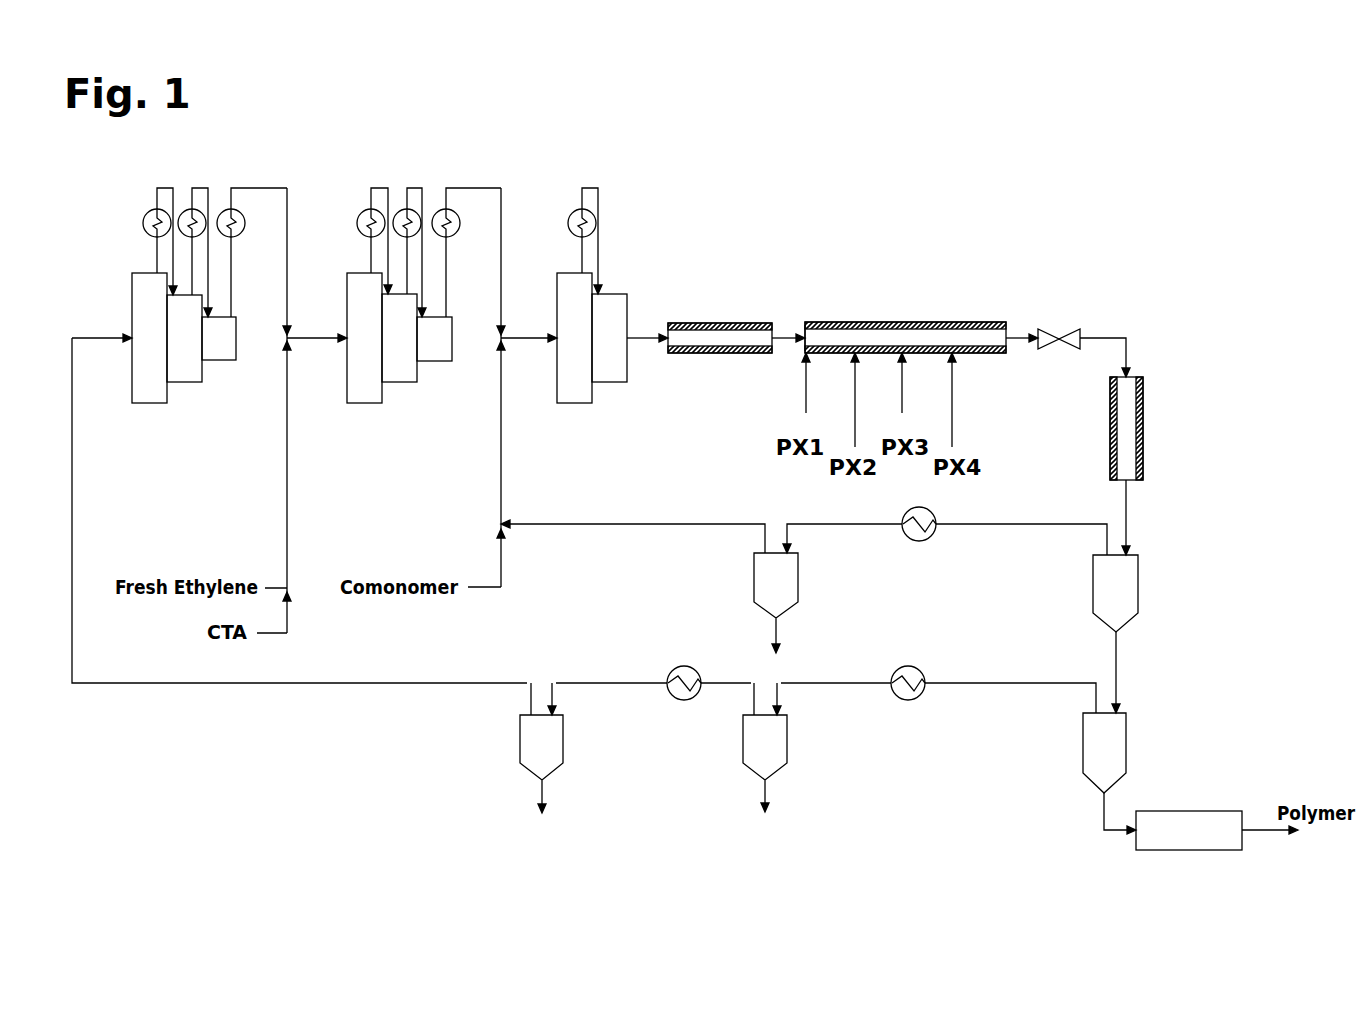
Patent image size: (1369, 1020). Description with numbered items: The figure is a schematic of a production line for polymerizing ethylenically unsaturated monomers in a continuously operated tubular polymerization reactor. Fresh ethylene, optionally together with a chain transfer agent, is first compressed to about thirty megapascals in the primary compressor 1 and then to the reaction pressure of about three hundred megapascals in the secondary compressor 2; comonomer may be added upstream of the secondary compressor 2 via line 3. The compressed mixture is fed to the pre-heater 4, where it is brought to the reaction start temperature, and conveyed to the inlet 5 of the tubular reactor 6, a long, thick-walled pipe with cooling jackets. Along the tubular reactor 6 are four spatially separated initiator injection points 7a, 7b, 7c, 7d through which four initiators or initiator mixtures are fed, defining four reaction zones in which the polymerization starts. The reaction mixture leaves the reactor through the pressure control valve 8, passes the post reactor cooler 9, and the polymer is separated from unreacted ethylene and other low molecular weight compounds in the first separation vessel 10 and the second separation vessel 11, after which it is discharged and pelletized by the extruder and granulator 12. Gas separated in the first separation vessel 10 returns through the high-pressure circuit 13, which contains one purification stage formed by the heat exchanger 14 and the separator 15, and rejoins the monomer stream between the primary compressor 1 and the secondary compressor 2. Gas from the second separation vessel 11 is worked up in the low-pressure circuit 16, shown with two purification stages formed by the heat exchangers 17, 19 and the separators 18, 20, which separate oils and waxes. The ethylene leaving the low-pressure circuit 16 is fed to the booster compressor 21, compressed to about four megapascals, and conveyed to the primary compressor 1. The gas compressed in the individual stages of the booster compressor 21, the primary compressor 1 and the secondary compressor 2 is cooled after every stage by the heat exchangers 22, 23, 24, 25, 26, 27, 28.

The primary compressor 1 is at (364, 392).
The secondary compressor 2 is at (574, 392).
The line 3 is at (503, 558).
The pre-heater 4 is at (698, 322).
The inlet 5 is at (806, 337).
The tubular reactor 6 is at (945, 322).
The initiator injection point 7a is at (808, 356).
The initiator injection point 7b is at (857, 356).
The initiator injection point 7c is at (904, 356).
The initiator injection point 7d is at (954, 356).
The pressure control valve 8 is at (1053, 337).
The post reactor cooler 9 is at (1110, 430).
The first separation vessel 10 is at (1100, 588).
The second separation vessel 11 is at (1090, 747).
The extruder and granulator 12 is at (1193, 820).
The high-pressure circuit 13 is at (857, 528).
The heat exchanger 14 is at (919, 542).
The separator 15 is at (760, 585).
The low-pressure circuit 16 is at (845, 687).
The heat exchanger 17 is at (908, 702).
The separator 18 is at (756, 763).
The heat exchanger 19 is at (684, 702).
The separator 20 is at (525, 745).
The booster compressor 21 is at (152, 392).
The heat exchanger 22 is at (143, 210).
The heat exchanger 23 is at (186, 210).
The heat exchanger 24 is at (227, 210).
The heat exchanger 25 is at (358, 210).
The heat exchanger 26 is at (401, 210).
The heat exchanger 27 is at (442, 210).
The heat exchanger 28 is at (572, 210).